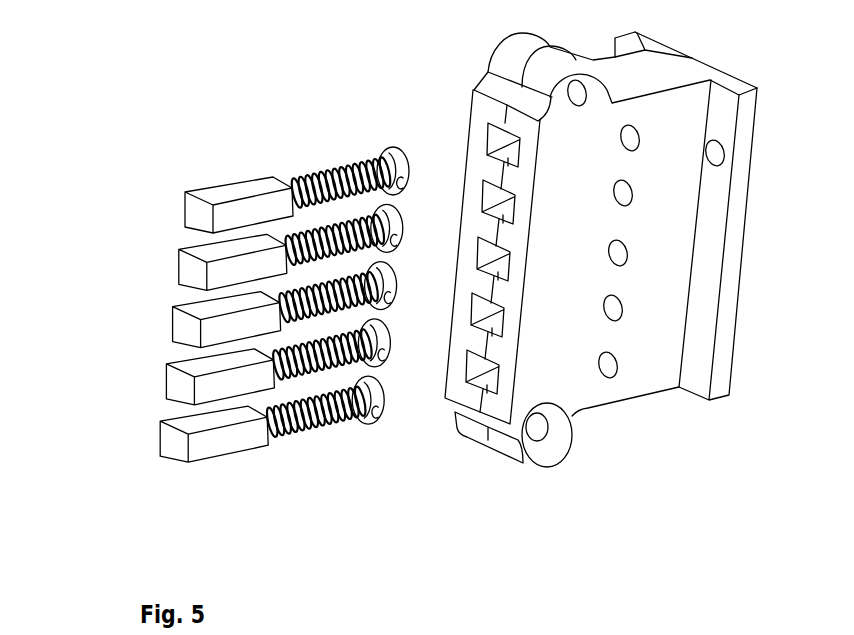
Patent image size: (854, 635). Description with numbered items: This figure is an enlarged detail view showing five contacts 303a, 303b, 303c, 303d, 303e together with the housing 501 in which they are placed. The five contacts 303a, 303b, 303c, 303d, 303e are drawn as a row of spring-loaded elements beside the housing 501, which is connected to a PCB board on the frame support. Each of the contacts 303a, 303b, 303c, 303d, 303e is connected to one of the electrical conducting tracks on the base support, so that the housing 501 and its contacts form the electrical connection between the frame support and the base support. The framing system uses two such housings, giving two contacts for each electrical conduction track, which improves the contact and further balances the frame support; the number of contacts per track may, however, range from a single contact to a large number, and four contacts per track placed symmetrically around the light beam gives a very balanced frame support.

The contact 303a is at (193, 216).
The contact 303b is at (187, 270).
The contact 303c is at (182, 326).
The contact 303d is at (178, 389).
The contact 303e is at (175, 444).
The housing 501 is at (650, 388).